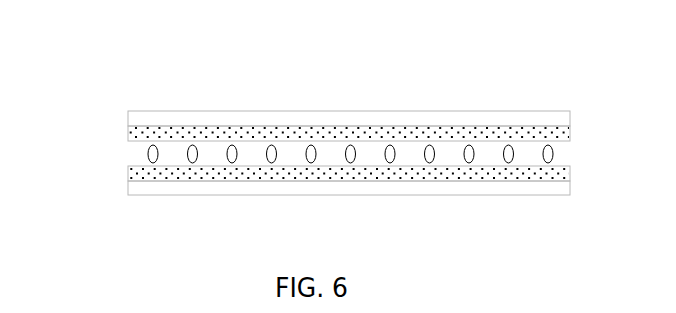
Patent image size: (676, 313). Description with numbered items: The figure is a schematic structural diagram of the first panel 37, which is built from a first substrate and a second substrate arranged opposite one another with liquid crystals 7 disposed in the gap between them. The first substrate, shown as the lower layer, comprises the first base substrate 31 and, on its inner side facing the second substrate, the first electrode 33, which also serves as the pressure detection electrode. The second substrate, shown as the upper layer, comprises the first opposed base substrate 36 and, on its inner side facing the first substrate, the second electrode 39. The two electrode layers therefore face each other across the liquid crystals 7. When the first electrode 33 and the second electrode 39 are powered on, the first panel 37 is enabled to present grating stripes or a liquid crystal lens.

The first panel 37 is at (117, 54).
The first opposed base substrate 36 is at (163, 115).
The second electrode 39 is at (137, 132).
The liquid crystals 7 is at (310, 154).
The first electrode 33 is at (137, 174).
The first base substrate 31 is at (152, 187).